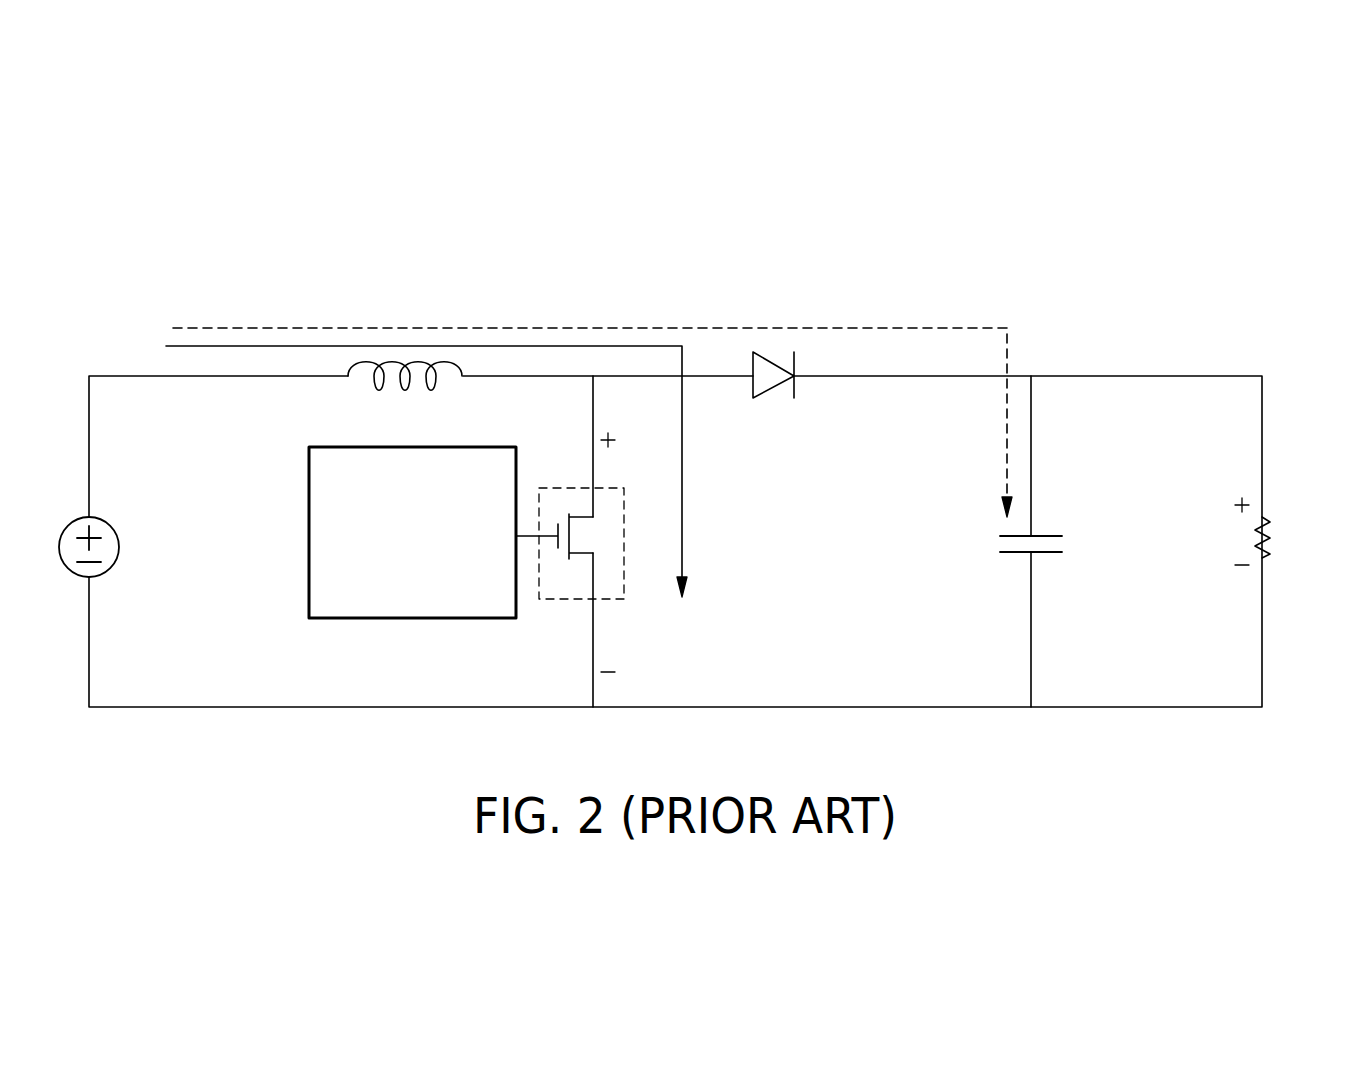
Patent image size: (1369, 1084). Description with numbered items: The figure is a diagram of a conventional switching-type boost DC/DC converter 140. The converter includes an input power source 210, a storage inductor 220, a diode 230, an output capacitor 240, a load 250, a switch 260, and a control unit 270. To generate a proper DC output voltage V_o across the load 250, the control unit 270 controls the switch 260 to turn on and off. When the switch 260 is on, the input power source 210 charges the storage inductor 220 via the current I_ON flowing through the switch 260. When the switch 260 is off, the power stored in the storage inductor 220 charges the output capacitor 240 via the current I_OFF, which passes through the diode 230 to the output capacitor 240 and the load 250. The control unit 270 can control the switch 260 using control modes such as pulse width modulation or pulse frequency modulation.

The switching-type boost DC/DC converter 140 is at (708, 430).
The input power source 210 is at (119, 557).
The storage inductor 220 is at (377, 380).
The diode 230 is at (768, 387).
The output capacitor 240 is at (1000, 540).
The load 250 is at (1272, 535).
The switch 260 is at (582, 600).
The control unit 270 is at (308, 518).